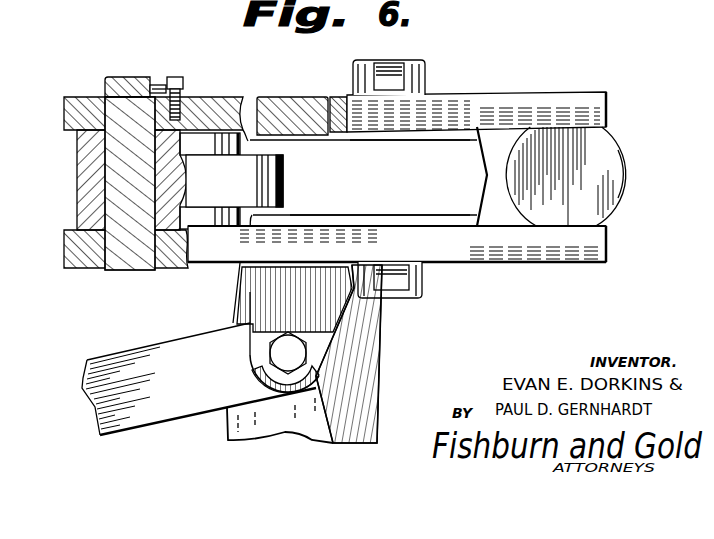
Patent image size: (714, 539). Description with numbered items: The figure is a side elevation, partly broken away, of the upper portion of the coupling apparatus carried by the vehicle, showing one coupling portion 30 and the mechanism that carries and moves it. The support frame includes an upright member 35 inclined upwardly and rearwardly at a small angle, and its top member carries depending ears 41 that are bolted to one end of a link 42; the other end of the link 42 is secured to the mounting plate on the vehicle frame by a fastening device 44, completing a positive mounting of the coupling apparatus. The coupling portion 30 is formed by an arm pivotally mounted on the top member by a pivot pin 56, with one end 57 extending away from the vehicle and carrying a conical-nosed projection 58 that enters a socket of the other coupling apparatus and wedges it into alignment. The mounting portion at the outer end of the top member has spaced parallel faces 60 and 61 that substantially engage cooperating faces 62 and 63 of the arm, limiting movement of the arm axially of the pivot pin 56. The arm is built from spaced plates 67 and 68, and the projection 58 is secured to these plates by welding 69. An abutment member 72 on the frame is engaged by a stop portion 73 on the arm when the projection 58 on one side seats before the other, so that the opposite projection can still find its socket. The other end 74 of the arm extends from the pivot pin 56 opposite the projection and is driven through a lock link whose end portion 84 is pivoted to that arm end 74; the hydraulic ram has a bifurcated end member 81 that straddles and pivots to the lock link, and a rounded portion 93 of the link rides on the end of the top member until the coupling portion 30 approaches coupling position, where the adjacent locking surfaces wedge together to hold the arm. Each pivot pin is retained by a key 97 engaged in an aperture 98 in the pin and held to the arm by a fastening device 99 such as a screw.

The coupling portion 30 is at (626, 186).
The upright member 35 is at (360, 363).
The depending ear 41 is at (262, 297).
The link 42 is at (180, 352).
The fastening device 44 is at (283, 362).
The pivot pin 56 is at (394, 66).
The arm end 57 is at (607, 109).
The projection 58 is at (626, 168).
The face 60 is at (470, 138).
The face 61 is at (470, 216).
The cooperating face 62 is at (403, 135).
The cooperating face 63 is at (390, 216).
The plate 67 is at (553, 92).
The plate 68 is at (580, 263).
The weld 69 is at (606, 226).
The abutment member 72 is at (292, 97).
The stop portion 73 is at (338, 95).
The arm end 74 is at (66, 234).
The bifurcated end member 81 is at (247, 133).
The lock arm end portion 84 is at (77, 183).
The rounded portion 93 is at (284, 183).
The key 97 is at (170, 77).
The aperture 98 is at (103, 95).
The fastening device 99 is at (185, 82).